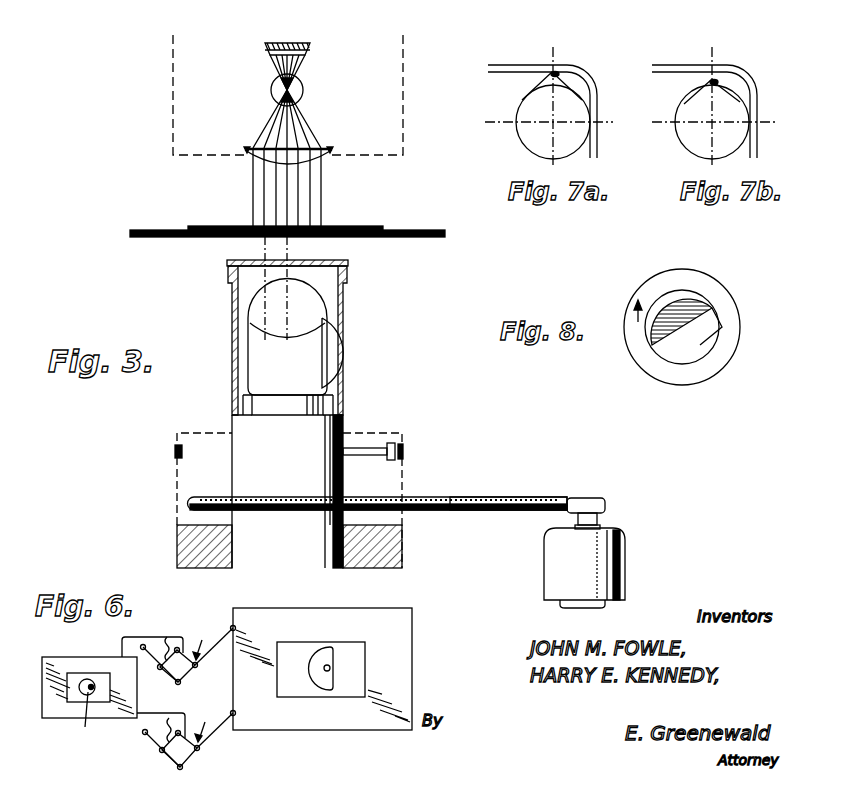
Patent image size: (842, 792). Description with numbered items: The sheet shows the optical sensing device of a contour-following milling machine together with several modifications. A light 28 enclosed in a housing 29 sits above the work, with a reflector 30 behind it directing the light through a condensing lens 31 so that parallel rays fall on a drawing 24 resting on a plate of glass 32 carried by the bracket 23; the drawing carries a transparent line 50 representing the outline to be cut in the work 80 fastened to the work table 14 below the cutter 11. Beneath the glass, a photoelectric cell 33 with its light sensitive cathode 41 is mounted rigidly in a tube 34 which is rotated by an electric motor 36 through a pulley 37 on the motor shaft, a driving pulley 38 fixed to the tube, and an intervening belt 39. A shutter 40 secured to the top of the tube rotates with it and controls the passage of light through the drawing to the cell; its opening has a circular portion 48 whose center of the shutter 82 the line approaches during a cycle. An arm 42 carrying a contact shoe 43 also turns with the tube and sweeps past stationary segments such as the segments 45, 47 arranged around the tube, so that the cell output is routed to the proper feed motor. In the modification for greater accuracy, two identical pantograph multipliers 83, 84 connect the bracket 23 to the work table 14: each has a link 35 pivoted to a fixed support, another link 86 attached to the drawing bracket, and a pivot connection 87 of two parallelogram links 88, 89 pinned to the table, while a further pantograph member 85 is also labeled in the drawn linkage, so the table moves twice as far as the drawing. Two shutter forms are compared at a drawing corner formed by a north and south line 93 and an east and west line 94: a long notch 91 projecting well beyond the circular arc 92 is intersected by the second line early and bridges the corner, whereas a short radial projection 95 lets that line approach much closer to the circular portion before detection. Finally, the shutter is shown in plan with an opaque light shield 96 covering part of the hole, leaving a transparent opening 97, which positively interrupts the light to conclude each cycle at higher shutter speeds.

In FIG. 6, the cutter 11 is at (86, 718).
In FIG. 6, the work table 14 is at (57, 712).
In FIG. 6, the bracket 23 is at (370, 612).
In FIG. 3, the drawing 24 is at (365, 228).
In FIG. 6, the drawing 24 is at (318, 690).
In FIG. 3, the light 28 is at (300, 89).
In FIG. 3, the housing 29 is at (403, 102).
In FIG. 3, the reflector 30 is at (303, 44).
In FIG. 3, the condensing lens 31 is at (328, 150).
In FIG. 3, the plate of glass 32 is at (423, 237).
In FIG. 3, the photoelectric cell 33 is at (340, 392).
In FIG. 3, the tube 34 is at (347, 346).
In FIG. 3, the link 35 is at (395, 556).
In FIG. 3, the electric motor 36 is at (625, 566).
In FIG. 3, the pulley 37 is at (581, 498).
In FIG. 3, the driving pulley 38 is at (390, 497).
In FIG. 3, the belt 39 is at (478, 497).
In FIG. 3, the shutter 40 is at (325, 262).
In FIG. 3, the light sensitive cathode 41 is at (283, 337).
In FIG. 3, the arm 42 is at (361, 455).
In FIG. 3, the contact shoe 43 is at (392, 443).
In FIG. 3, the stationary segment 45 is at (405, 452).
In FIG. 3, the stationary segment 47 is at (175, 452).
In FIG. 6, the circular portion 48 is at (330, 668).
In FIG. 3, the line 50 is at (265, 227).
In FIG. 6, the work 80 is at (80, 675).
In FIG. 3, the center of the shutter 82 is at (287, 308).
In FIG. 6, the pantograph multiplier 83 is at (201, 641).
In FIG. 6, the pantograph multiplier 84 is at (140, 750).
In FIG. 6, the lever 85 is at (152, 640).
In FIG. 6, the link 86 is at (218, 645).
In FIG. 6, the pivot connection 87 is at (183, 637).
In FIG. 6, the parallelogram link 88 is at (167, 637).
In FIG. 6, the parallelogram link 89 is at (173, 672).
In FIG. 7A, the notch 91 is at (558, 73).
In FIG. 7A, the circular arc 92 is at (520, 140).
In FIG. 7B, the circular arc 92 is at (690, 152).
In FIG. 7A, the north and south line 93 is at (599, 146).
In FIG. 7B, the north and south line 93 is at (759, 146).
In FIG. 7A, the east and west line 94 is at (526, 64).
In FIG. 7B, the east and west line 94 is at (694, 64).
In FIG. 7B, the short radial projection 95 is at (716, 82).
In FIG. 8, the opaque light shield 96 is at (682, 305).
In FIG. 8, the transparent opening 97 is at (700, 345).